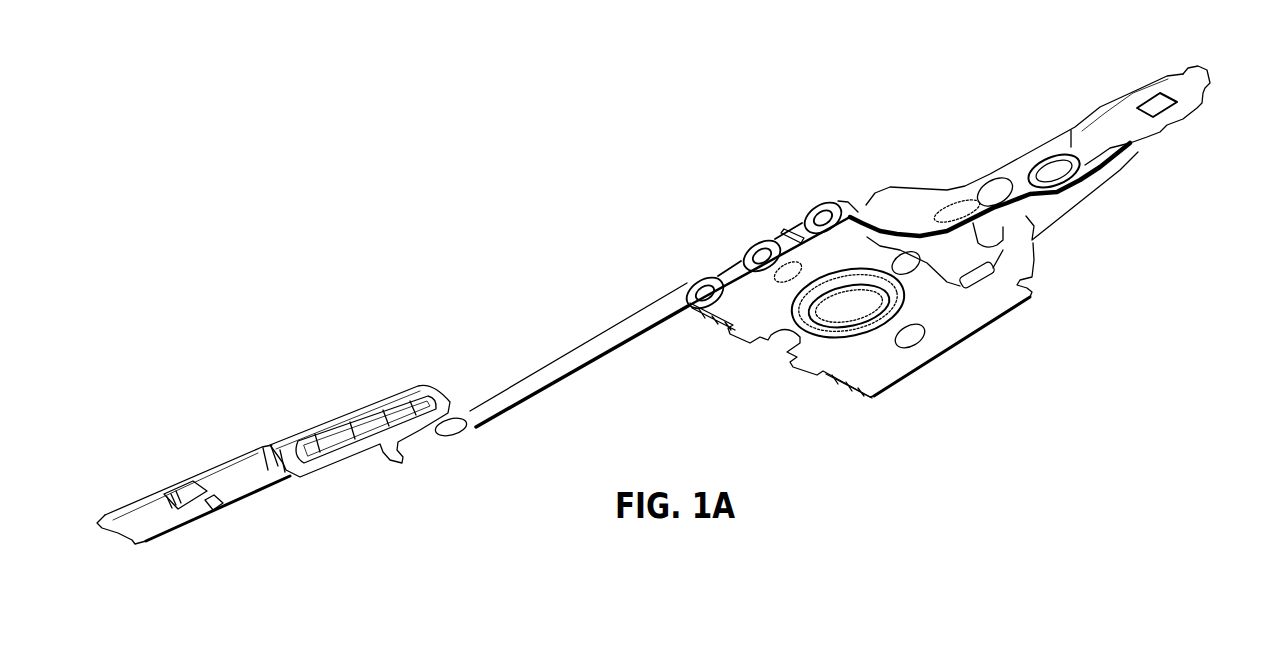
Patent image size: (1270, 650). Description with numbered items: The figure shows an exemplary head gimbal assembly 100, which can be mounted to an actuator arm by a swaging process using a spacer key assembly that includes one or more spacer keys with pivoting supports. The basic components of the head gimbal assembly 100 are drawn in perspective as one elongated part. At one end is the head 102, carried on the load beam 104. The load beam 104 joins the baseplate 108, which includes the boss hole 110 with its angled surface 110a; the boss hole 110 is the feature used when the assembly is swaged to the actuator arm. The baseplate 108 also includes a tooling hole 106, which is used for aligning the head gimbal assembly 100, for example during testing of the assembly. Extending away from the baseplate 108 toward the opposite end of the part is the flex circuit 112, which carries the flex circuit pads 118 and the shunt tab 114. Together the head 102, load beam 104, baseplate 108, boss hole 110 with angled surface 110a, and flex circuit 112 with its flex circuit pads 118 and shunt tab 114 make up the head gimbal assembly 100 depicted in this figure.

The head gimbal assembly 100 is at (1074, 374).
The head 102 is at (1163, 100).
The load beam 104 is at (1063, 197).
The tooling hole 106 is at (1053, 168).
The baseplate 108 is at (885, 375).
The boss hole 110 is at (838, 318).
The angled surface 110a is at (797, 313).
The flex circuit 112 is at (520, 383).
The shunt tab 114 is at (188, 501).
The flex circuit pads 118 is at (350, 432).